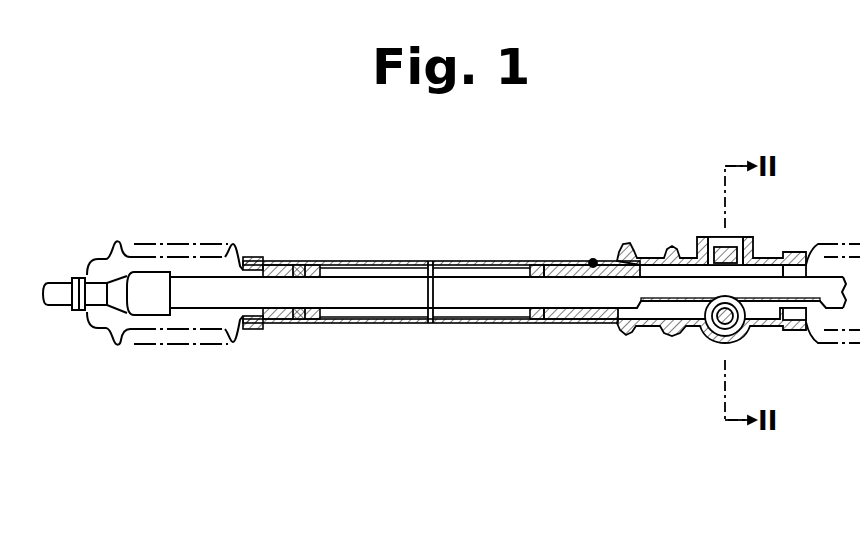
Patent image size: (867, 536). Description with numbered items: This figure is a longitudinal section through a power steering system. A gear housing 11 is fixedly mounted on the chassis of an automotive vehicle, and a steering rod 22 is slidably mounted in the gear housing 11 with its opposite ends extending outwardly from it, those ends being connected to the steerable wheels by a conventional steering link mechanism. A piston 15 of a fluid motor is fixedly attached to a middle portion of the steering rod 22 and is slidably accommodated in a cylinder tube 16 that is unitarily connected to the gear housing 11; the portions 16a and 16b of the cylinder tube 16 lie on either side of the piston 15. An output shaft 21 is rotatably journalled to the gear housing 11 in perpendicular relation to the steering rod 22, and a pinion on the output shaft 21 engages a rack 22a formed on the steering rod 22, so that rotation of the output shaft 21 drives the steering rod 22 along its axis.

The gear housing 11 is at (645, 330).
The piston 15 is at (433, 262).
The cylinder tube 16 is at (393, 262).
The left piston seal 16a is at (400, 323).
The right piston seal 16b is at (515, 323).
The output shaft 21 is at (740, 335).
The steering rod 22 is at (475, 300).
The rack 22a is at (687, 327).